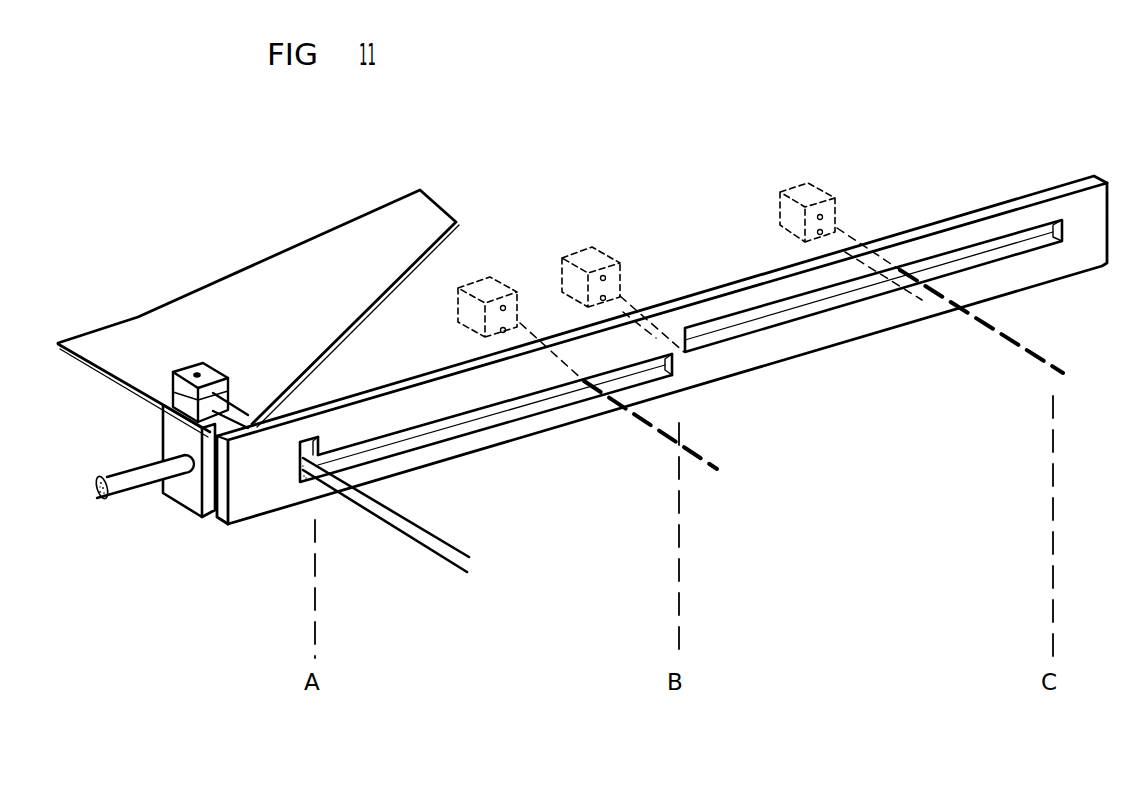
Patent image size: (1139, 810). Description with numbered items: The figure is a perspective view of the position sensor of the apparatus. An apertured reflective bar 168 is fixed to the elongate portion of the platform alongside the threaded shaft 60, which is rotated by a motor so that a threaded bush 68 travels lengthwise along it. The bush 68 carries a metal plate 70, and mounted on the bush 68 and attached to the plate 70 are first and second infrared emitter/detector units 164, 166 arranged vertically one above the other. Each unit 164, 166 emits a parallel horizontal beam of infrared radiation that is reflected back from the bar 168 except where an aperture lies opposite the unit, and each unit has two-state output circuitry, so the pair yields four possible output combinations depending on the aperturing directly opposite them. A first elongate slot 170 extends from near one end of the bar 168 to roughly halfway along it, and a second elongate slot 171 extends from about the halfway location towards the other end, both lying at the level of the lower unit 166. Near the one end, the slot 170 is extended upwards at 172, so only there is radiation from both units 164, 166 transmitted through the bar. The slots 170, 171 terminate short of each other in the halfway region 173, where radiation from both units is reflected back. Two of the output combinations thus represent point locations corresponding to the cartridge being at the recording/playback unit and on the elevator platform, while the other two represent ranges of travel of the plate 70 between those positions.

The threaded shaft 60 is at (120, 477).
The threaded bush 68 is at (183, 502).
The metal plate 70 is at (253, 272).
The first infrared emitter/detector unit 164 is at (210, 373).
The second infrared emitter/detector unit 166 is at (178, 403).
The apertured reflective bar 168 is at (248, 510).
The first elongate slot 170 is at (532, 398).
The second elongate slot 171 is at (832, 292).
The upward extension of the first slot 172 is at (320, 452).
The halfway region 173 is at (679, 368).